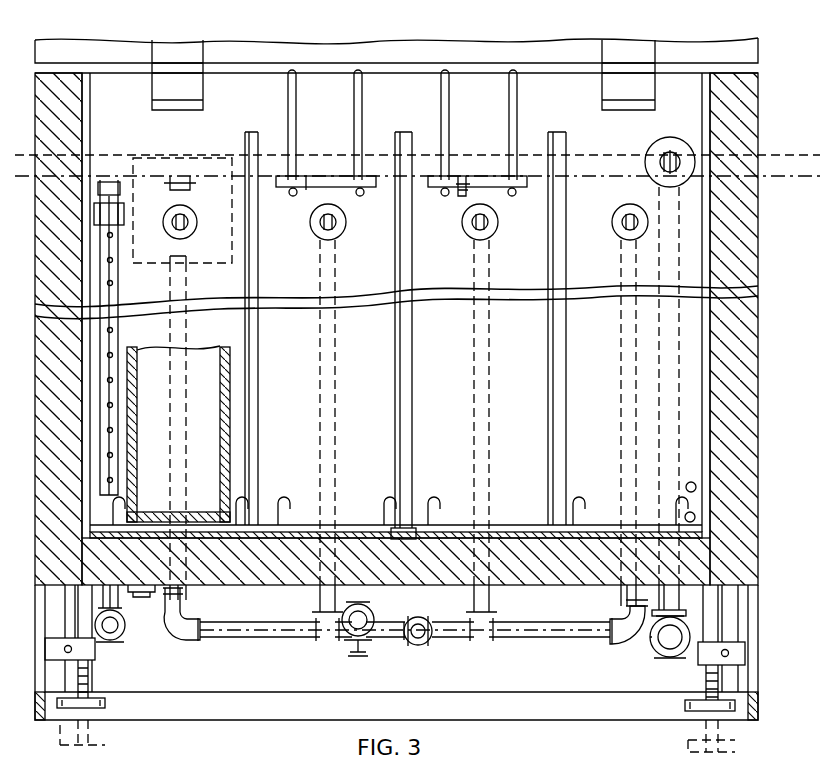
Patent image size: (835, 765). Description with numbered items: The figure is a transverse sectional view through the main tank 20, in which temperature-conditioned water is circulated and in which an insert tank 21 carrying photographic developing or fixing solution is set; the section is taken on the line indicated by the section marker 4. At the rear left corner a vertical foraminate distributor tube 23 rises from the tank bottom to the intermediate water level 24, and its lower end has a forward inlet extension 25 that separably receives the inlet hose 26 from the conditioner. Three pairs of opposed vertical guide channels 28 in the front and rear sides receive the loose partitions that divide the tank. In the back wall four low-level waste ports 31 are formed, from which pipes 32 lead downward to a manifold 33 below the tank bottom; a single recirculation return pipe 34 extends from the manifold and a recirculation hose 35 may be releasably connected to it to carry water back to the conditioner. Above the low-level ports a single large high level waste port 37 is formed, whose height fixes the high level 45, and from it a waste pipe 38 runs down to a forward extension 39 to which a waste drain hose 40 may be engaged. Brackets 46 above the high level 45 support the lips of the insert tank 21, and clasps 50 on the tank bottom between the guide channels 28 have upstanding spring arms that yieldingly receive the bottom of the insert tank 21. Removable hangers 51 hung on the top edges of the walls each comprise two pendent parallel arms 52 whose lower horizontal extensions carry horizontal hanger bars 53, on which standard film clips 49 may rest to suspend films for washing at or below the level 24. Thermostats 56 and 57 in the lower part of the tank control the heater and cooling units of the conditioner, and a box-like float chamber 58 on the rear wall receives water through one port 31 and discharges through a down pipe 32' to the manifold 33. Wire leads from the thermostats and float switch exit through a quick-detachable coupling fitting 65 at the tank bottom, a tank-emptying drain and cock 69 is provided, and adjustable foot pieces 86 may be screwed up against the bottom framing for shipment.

The section line 4- 4 is at (178, 33).
The main tank 20 is at (750, 240).
The insert tank 21 is at (208, 352).
The foraminate distributor tube 23 is at (118, 333).
The intermediate water level 24 is at (618, 168).
The forward inlet extension 25 is at (118, 640).
The inlet hose 26 is at (108, 645).
The vertical guide channel 28 is at (259, 246).
The low-level waste port 31 is at (188, 218).
The pipe 32 is at (478, 428).
The down pipe 32' is at (204, 437).
The manifold 33 is at (264, 632).
The recirculation return pipe 34 is at (410, 644).
The recirculation hose 35 is at (423, 645).
The high level waste port 37 is at (682, 146).
The waste pipe 38 is at (659, 272).
The forward extension 39 is at (652, 648).
The waste drain hose 40 is at (668, 658).
The high level 45 is at (600, 157).
The bracket 46 is at (198, 84).
The film clip 49 is at (462, 196).
The clasp 50 is at (236, 495).
The hanger 51 is at (297, 145).
The pendent arm 52 is at (356, 104).
The hanger bar 53 is at (314, 188).
The thermostat 56 is at (695, 484).
The thermostat 57 is at (696, 517).
The float chamber 58 is at (163, 264).
The quick-detachable coupling fitting 65 is at (143, 596).
The tank-emptying drain and cock 69 is at (370, 620).
The adjustable foot piece 86 is at (104, 706).